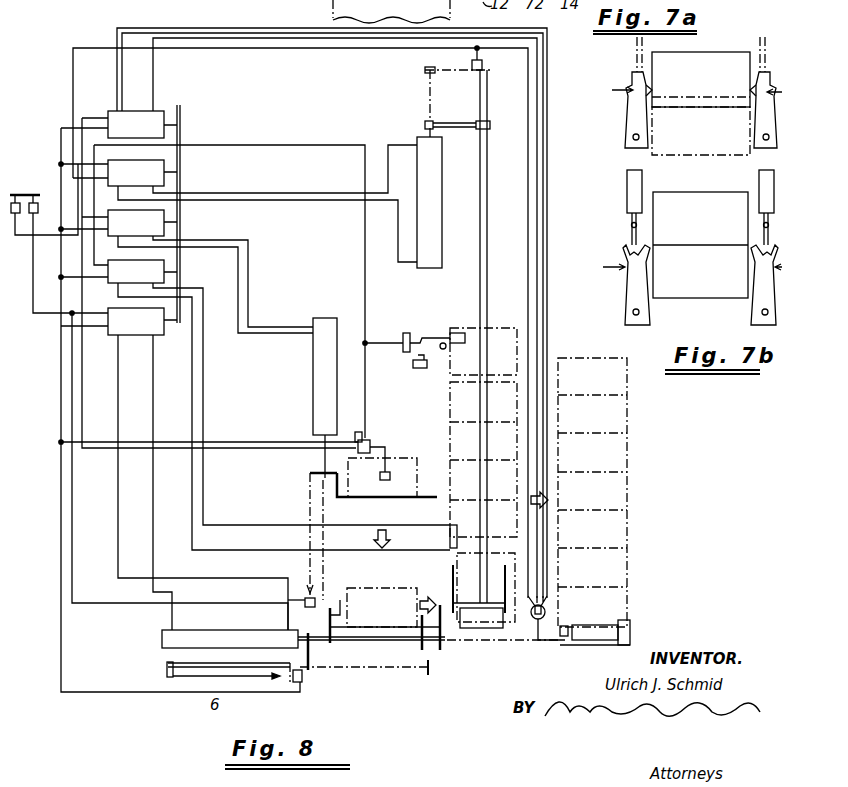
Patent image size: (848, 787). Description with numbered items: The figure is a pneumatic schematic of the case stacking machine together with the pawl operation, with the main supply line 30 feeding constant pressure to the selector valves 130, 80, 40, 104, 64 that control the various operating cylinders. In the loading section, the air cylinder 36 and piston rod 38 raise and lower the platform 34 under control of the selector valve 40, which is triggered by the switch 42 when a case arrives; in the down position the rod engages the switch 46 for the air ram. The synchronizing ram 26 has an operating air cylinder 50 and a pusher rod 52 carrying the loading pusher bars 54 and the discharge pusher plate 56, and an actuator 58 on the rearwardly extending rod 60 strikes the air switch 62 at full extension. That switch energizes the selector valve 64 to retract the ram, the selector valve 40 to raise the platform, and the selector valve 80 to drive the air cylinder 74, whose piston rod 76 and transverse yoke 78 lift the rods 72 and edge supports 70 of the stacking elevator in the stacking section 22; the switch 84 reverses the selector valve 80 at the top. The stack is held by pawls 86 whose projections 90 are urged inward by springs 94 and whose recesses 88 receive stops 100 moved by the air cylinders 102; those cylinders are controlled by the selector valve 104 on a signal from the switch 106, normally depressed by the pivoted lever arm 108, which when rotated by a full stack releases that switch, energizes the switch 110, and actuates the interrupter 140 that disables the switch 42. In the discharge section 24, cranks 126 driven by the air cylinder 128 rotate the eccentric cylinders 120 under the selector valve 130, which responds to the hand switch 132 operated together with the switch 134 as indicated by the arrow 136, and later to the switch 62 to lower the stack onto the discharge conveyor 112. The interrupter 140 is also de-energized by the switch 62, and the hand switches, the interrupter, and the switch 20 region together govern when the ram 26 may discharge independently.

In FIG. 8, the switch unit 20 is at (374, 438).
In FIG. 8, the stacking section 22 is at (430, 324).
In FIG. 8, the discharge section 24 is at (640, 600).
In FIG. 8, the synchronizing ram 26 is at (183, 693).
In FIG. 8, the main supply line 30 is at (182, 118).
In FIG. 8, the platform 34 is at (404, 498).
In FIG. 8, the air cylinder 36 is at (314, 365).
In FIG. 8, the piston rod 38 is at (320, 453).
In FIG. 8, the selector valve 40 is at (146, 234).
In FIG. 8, the switch 42 is at (392, 475).
In FIG. 8, the switch 46 is at (305, 603).
In FIG. 8, the operating air cylinder 50 is at (220, 636).
In FIG. 8, the pusher rod 52 is at (378, 637).
In FIG. 8, the loading pusher bars 54 is at (345, 600).
In FIG. 8, the discharge pusher plate 56 is at (440, 607).
In FIG. 8, the actuator 58 is at (167, 669).
In FIG. 8, the rearwardly extending rod 60 is at (190, 663).
In FIG. 8, the air switch 62 is at (303, 678).
In FIG. 8, the selector valve 64 is at (146, 333).
In FIG. 8, the edge supports 70 is at (487, 630).
In FIG. 8, the vertically extending rods 72 is at (490, 268).
In FIG. 8, the air cylinder 74 is at (443, 192).
In FIG. 8, the piston rod 76 is at (428, 128).
In FIG. 8, the transverse yoke 78 is at (455, 122).
In FIG. 8, the selector valve 80 is at (146, 184).
In FIG. 8, the switch 84 is at (483, 66).
In FIG. 8, the pawls 86 is at (452, 576).
In FIG. 7A, the pawls 86 is at (628, 125).
In FIG. 7B, the pawls 86 is at (628, 300).
In FIG. 7A, the case supporting recesses 88 is at (660, 84).
In FIG. 7A, the projections 90 is at (655, 84).
In FIG. 7B, the projections 90 is at (650, 250).
In FIG. 7A, the springs 94 is at (620, 88).
In FIG. 7B, the springs 94 is at (612, 265).
In FIG. 7B, the stops 100 is at (628, 250).
In FIG. 8, the air cylinders 102 is at (450, 537).
In FIG. 7B, the air cylinders 102 is at (627, 190).
In FIG. 8, the selector valve 104 is at (150, 280).
In FIG. 8, the switch 106 is at (406, 333).
In FIG. 8, the pivoted lever arm 108 is at (440, 338).
In FIG. 8, the switch 110 is at (413, 364).
In FIG. 7A, the discharge conveyor 112 is at (705, 0).
In FIG. 8, the cylinders 120 is at (600, 632).
In FIG. 8, the cranks 126 is at (535, 640).
In FIG. 8, the air cylinder 128 is at (546, 608).
In FIG. 8, the selector valve 130 is at (146, 136).
In FIG. 8, the switch 132 is at (15, 235).
In FIG. 8, the switch 134 is at (38, 200).
In FIG. 8, the arrow 136 is at (25, 190).
In FIG. 8, the interrupter 140 is at (356, 432).